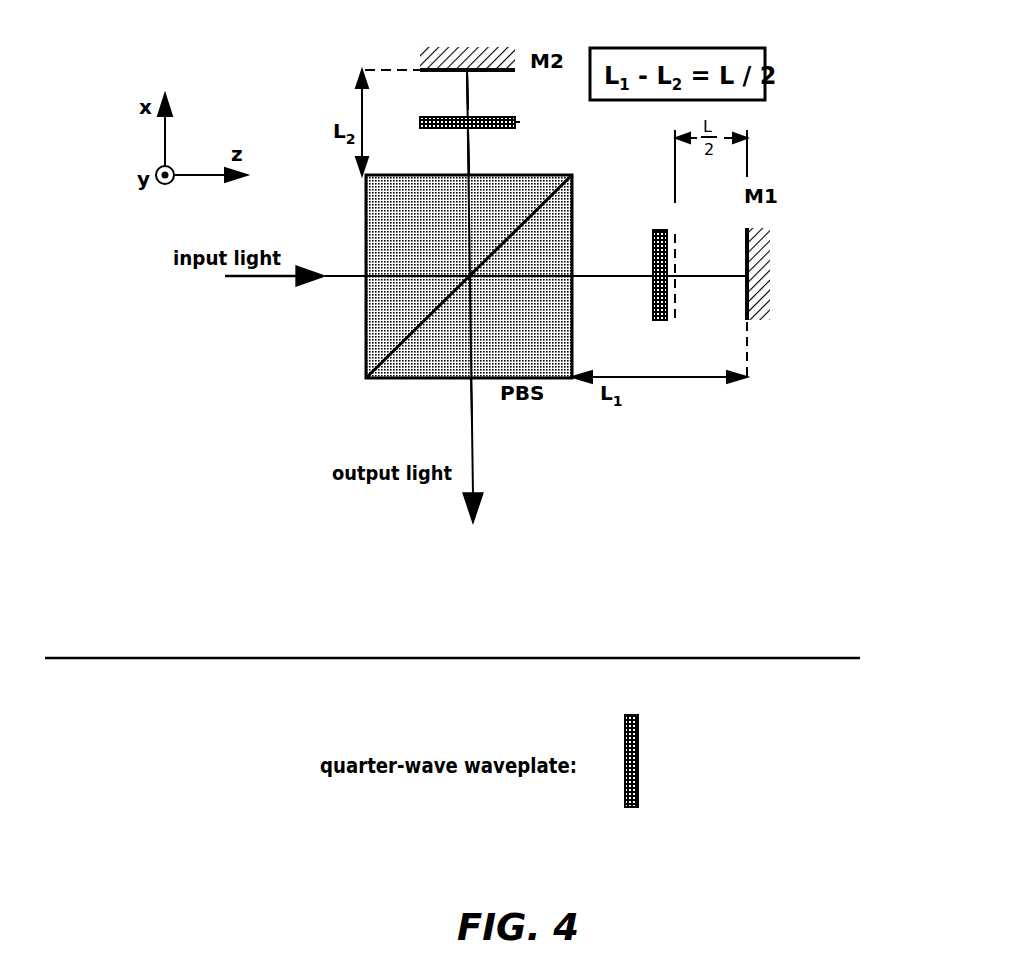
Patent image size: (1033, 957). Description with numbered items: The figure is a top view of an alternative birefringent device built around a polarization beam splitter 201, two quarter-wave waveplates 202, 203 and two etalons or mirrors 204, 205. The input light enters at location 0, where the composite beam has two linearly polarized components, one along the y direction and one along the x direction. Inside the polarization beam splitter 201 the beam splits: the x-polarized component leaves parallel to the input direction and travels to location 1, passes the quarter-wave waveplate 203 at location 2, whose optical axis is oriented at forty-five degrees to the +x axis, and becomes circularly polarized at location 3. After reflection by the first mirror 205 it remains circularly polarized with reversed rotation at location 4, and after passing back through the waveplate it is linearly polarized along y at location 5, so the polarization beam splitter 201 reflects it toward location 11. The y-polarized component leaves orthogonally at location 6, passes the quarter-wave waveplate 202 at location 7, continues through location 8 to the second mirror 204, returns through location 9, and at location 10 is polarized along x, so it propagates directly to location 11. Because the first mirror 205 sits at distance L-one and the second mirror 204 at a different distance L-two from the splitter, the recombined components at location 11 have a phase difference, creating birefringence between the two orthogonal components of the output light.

The location 0 is at (361, 270).
The location 1 is at (593, 268).
The location 2 is at (685, 232).
The location 3 is at (732, 268).
The location 4 is at (732, 306).
The location 5 is at (593, 306).
The location 6 is at (487, 164).
The location 7 is at (532, 133).
The location 8 is at (487, 96).
The location 9 is at (461, 96).
The location 10 is at (461, 164).
The location 11 is at (467, 404).
The polarization beam splitter 201 is at (366, 305).
The quarter-wave waveplate 202 is at (420, 123).
The quarter-wave waveplate 203 is at (653, 298).
The second mirror 204 is at (468, 47).
The first mirror 205 is at (747, 307).